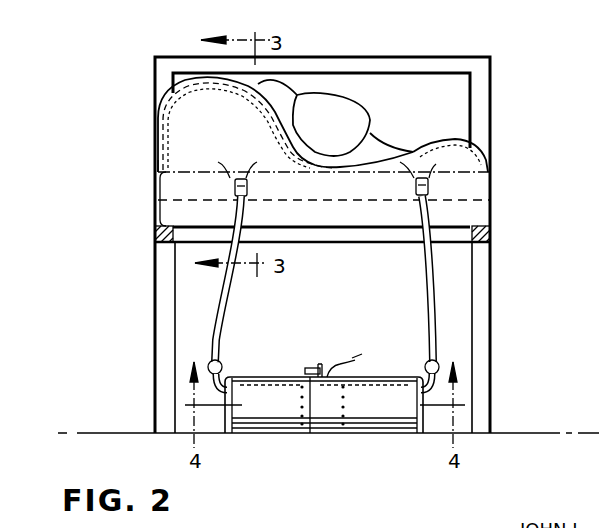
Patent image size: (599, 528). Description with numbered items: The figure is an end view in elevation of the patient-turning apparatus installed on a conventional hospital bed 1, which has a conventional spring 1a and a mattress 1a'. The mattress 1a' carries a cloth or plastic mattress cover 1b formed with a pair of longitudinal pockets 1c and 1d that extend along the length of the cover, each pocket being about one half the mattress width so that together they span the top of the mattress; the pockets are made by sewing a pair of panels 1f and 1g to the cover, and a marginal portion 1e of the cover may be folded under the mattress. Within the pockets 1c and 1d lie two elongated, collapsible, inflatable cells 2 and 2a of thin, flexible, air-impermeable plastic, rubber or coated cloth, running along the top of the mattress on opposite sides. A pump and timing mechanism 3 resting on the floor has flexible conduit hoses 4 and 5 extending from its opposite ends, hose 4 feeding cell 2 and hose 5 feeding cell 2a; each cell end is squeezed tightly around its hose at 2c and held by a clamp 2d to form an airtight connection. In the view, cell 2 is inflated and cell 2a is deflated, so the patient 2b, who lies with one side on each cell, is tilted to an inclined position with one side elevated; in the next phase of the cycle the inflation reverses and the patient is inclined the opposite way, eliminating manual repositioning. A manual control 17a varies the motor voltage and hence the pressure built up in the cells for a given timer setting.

The hospital bed 1 is at (447, 140).
The spring 1a is at (294, 207).
The mattress 1a' is at (286, 191).
The mattress cover 1b is at (167, 105).
The longitudinal pocket 1c is at (157, 130).
The longitudinal pocket 1d is at (478, 147).
The marginal portion 1e is at (157, 166).
The panel 1f is at (168, 98).
The panel 1g is at (500, 97).
The inflatable cell 2 is at (173, 83).
The inflatable cell 2a is at (463, 137).
The patient 2b is at (303, 93).
The clamped cell end 2c is at (425, 175).
The clamp 2d is at (248, 192).
The pump and timing mechanism 3 is at (386, 408).
The flexible conduit hose 4 is at (222, 312).
The flexible conduit hose 5 is at (433, 283).
The manual control 17a is at (341, 339).